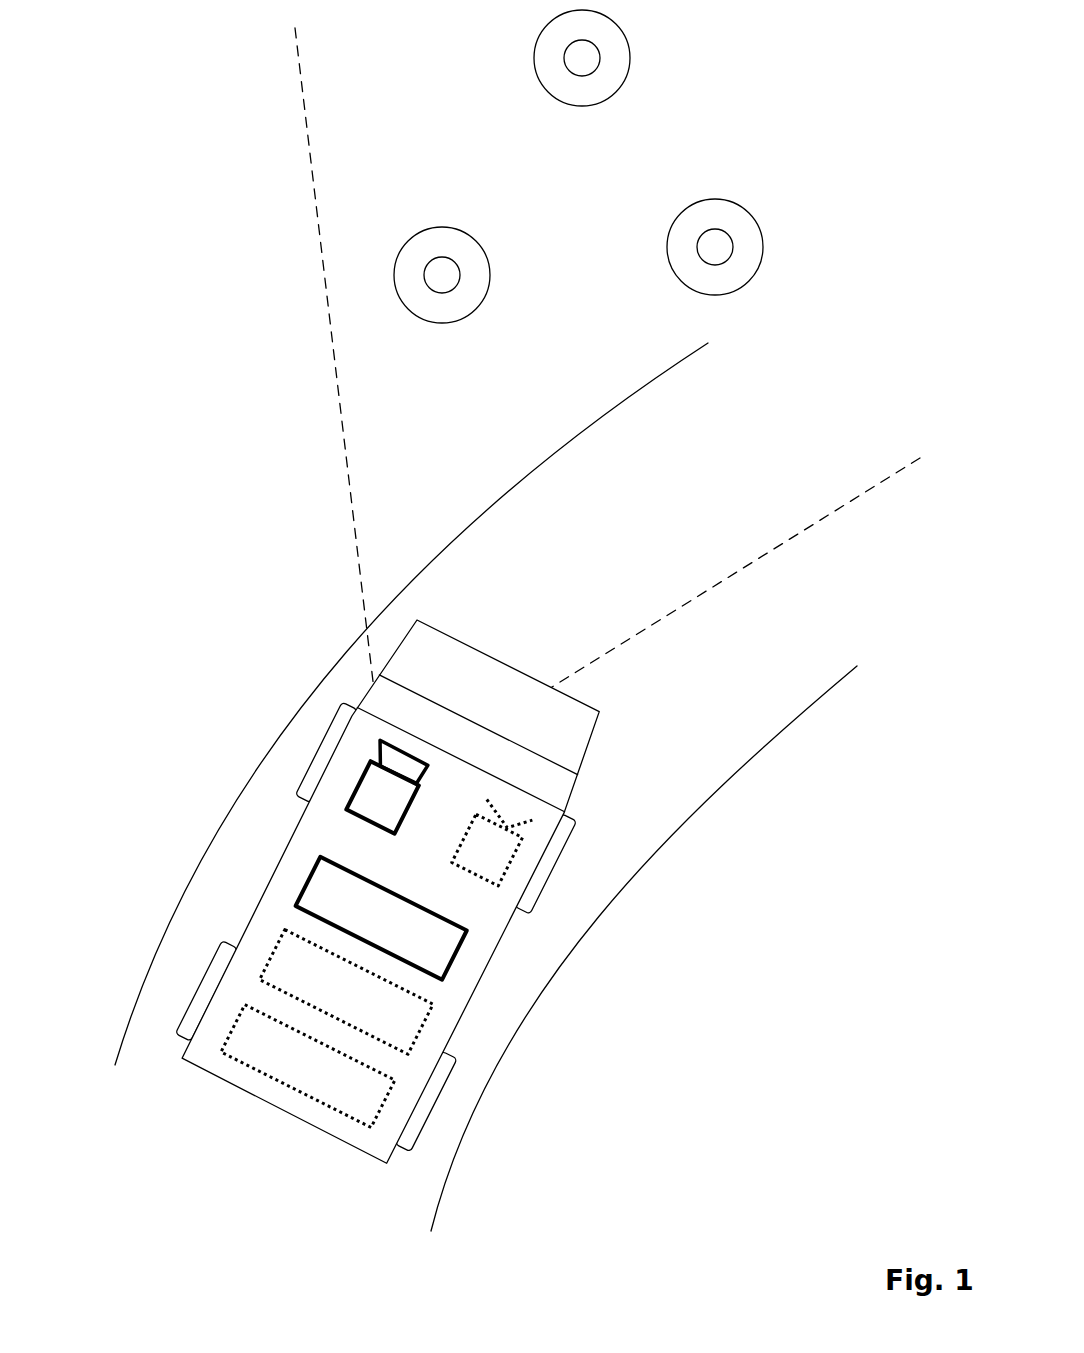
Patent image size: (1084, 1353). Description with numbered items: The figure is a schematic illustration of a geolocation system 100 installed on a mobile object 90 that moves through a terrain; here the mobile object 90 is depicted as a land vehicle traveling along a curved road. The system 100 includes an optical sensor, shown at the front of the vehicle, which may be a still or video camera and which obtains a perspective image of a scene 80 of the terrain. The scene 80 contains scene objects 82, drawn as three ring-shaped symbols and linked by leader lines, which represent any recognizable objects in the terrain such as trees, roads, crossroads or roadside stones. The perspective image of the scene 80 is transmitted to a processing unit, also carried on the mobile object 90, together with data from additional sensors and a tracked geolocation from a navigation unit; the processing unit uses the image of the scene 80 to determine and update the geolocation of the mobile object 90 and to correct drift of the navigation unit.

The scene 80 is at (611, 166).
The scene objects 82 is at (432, 227).
The mobile object 90 is at (455, 1018).
The geolocation system 100 is at (338, 889).